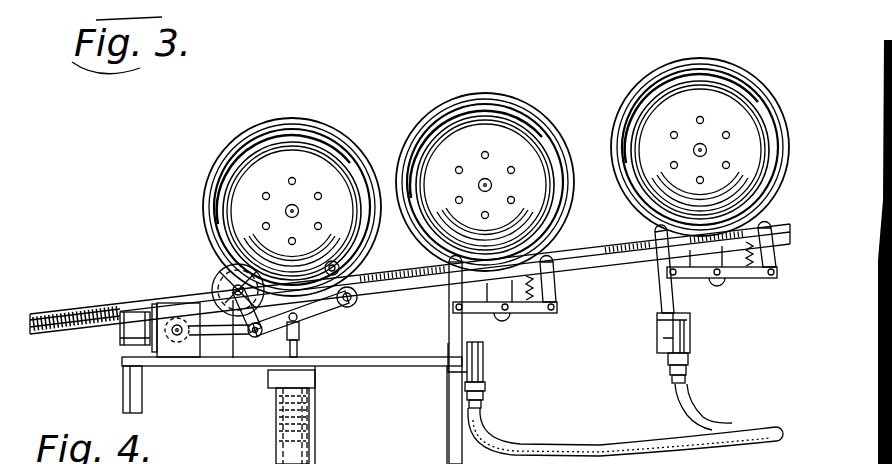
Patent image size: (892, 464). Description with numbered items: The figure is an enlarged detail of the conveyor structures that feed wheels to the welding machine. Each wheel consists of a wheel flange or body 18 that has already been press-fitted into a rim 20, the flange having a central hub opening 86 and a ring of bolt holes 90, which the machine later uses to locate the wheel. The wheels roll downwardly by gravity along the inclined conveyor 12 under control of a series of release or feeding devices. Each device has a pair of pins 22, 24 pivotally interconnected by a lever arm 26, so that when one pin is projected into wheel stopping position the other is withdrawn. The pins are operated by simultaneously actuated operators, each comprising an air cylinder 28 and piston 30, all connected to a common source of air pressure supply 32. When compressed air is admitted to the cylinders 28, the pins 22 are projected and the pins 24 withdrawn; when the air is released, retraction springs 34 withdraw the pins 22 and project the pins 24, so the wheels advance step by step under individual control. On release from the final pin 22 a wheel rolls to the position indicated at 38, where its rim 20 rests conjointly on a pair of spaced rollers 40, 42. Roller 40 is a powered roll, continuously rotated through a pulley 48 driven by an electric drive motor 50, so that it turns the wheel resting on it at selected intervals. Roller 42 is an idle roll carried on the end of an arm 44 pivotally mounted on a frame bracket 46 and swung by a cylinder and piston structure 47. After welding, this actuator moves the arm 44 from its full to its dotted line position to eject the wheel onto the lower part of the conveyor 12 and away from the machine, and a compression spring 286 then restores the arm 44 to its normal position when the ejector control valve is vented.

The inclined conveyor 12 is at (408, 288).
The wheel flange or body 18 is at (316, 172).
The rim 20 is at (220, 152).
The pin 22 is at (448, 294).
The pin 24 is at (548, 283).
The lever arm 26 is at (480, 311).
The air cylinder 28 is at (485, 372).
The piston 30 is at (657, 321).
The source of air pressure supply 32 is at (740, 428).
The retraction spring 34 is at (529, 303).
The wheel position 38 is at (194, 237).
The roller 40 is at (256, 263).
The roller 42 is at (340, 266).
The arm 44 is at (298, 321).
The frame bracket 46 is at (253, 346).
The cylinder and piston structure 47 is at (285, 133).
The pulley 48 is at (226, 283).
The electric drive motor 50 is at (130, 318).
The hub opening 86 is at (286, 210).
The bolt holes 90 is at (290, 179).
The compression spring 286 is at (272, 418).